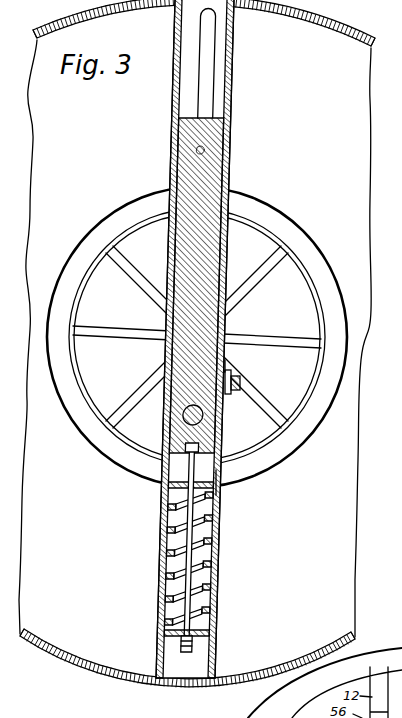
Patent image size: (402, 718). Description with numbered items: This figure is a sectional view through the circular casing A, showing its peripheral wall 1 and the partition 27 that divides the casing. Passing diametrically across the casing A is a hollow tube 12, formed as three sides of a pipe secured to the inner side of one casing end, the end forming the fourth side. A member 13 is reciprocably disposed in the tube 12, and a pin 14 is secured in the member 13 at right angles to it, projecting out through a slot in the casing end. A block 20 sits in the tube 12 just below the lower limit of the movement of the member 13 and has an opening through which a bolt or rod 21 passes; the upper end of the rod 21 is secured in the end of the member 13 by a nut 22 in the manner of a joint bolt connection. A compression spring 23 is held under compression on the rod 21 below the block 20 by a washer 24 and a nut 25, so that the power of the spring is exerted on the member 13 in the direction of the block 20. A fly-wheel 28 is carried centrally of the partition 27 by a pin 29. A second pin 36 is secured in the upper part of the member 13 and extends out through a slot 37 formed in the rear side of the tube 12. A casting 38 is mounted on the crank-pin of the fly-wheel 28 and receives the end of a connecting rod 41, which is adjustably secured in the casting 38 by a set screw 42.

The circular casing A is at (197, 343).
The peripheral wall 1 is at (343, 33).
The hollow tube 12 is at (177, 89).
The reciprocable member 13 is at (182, 147).
The pin 14 is at (166, 421).
The block 20 is at (222, 493).
The bolt or rod 21 is at (180, 483).
The nut 22 is at (171, 447).
The compression spring 23 is at (166, 544).
The washer 24 is at (163, 634).
The nut 25 is at (180, 641).
The partition 27 is at (210, 340).
The fly-wheel 28 is at (197, 337).
The pin 29 is at (165, 348).
The second pin 36 is at (205, 150).
The slot 37 is at (208, 92).
The casting 38 is at (240, 379).
The connecting rod 41 is at (227, 366).
The set screw 42 is at (242, 384).